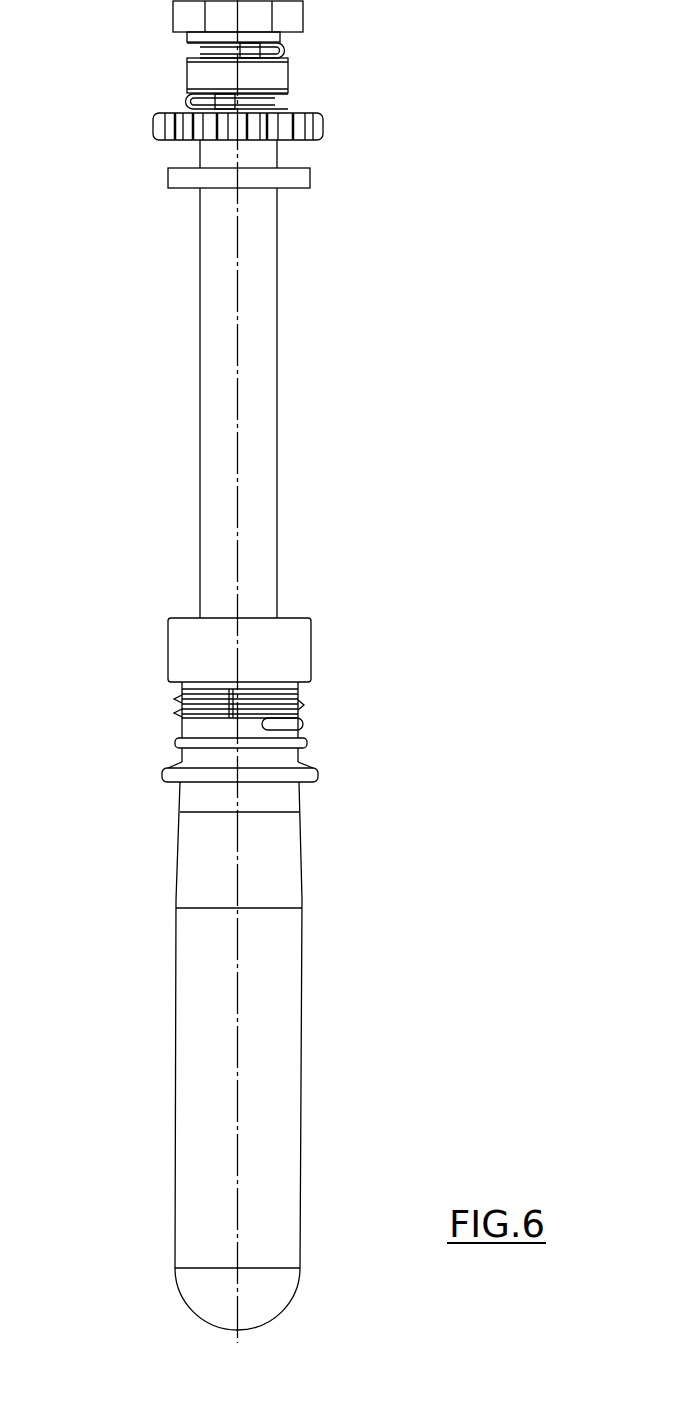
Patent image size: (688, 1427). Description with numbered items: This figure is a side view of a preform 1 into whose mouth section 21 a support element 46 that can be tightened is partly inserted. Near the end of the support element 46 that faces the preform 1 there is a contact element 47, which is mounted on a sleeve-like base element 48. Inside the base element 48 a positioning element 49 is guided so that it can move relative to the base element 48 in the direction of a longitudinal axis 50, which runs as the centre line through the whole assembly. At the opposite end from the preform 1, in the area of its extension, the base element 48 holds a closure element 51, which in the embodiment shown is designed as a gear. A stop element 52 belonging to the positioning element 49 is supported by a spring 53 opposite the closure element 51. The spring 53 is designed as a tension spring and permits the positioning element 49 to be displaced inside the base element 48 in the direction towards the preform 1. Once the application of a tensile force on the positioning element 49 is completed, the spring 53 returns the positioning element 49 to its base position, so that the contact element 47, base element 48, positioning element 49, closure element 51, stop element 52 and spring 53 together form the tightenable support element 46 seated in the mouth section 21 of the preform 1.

The preform 1 is at (287, 1068).
The mouth section 21 is at (300, 708).
The support element 46 is at (330, 397).
The contact element 47 is at (303, 652).
The base element 48 is at (264, 297).
The positioning element 49 is at (288, 97).
The longitudinal axis 50 is at (233, 390).
The closure element 51 is at (155, 120).
The stop element 52 is at (303, 18).
The spring 53 is at (187, 43).